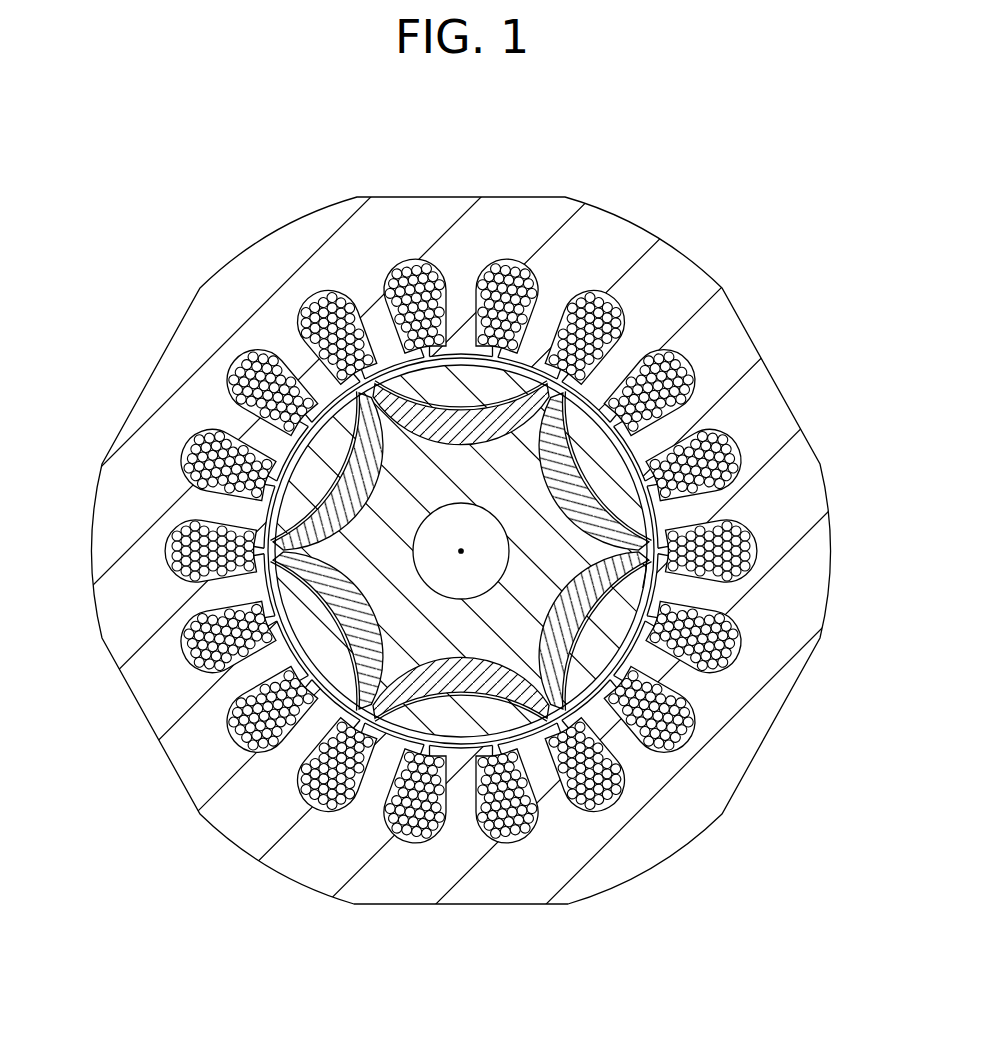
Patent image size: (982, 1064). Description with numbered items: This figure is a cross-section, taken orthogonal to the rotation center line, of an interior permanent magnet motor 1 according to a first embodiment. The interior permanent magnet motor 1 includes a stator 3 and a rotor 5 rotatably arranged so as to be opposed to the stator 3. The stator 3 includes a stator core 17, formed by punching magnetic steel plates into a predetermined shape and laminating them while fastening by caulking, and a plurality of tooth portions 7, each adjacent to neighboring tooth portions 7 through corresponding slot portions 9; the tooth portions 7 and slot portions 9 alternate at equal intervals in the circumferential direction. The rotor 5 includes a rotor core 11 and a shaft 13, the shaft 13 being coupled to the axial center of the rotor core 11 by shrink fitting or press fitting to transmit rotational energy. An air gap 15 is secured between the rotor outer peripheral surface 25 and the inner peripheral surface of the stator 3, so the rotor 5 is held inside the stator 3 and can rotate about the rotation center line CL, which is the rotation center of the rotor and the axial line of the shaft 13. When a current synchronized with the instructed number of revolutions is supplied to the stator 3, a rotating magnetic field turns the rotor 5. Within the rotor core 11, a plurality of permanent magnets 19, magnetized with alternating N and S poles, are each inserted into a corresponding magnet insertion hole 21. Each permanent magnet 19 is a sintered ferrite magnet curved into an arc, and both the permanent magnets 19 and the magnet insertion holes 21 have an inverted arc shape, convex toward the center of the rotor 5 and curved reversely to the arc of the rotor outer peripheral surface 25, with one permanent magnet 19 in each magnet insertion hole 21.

The interior permanent magnet motor 1 is at (72, 149).
The stator 3 is at (385, 227).
The rotor 5 is at (645, 527).
The tooth portion 7 is at (278, 448).
The slot portion 9 is at (260, 350).
The rotor core 11 is at (640, 520).
The shaft 13 is at (370, 637).
The air gap 15 is at (262, 512).
The stator core 17 is at (625, 258).
The permanent magnet 19 is at (625, 578).
The magnet insertion hole 21 is at (590, 637).
The rotor outer peripheral surface 25 is at (572, 698).
The rotation center line CL is at (460, 552).